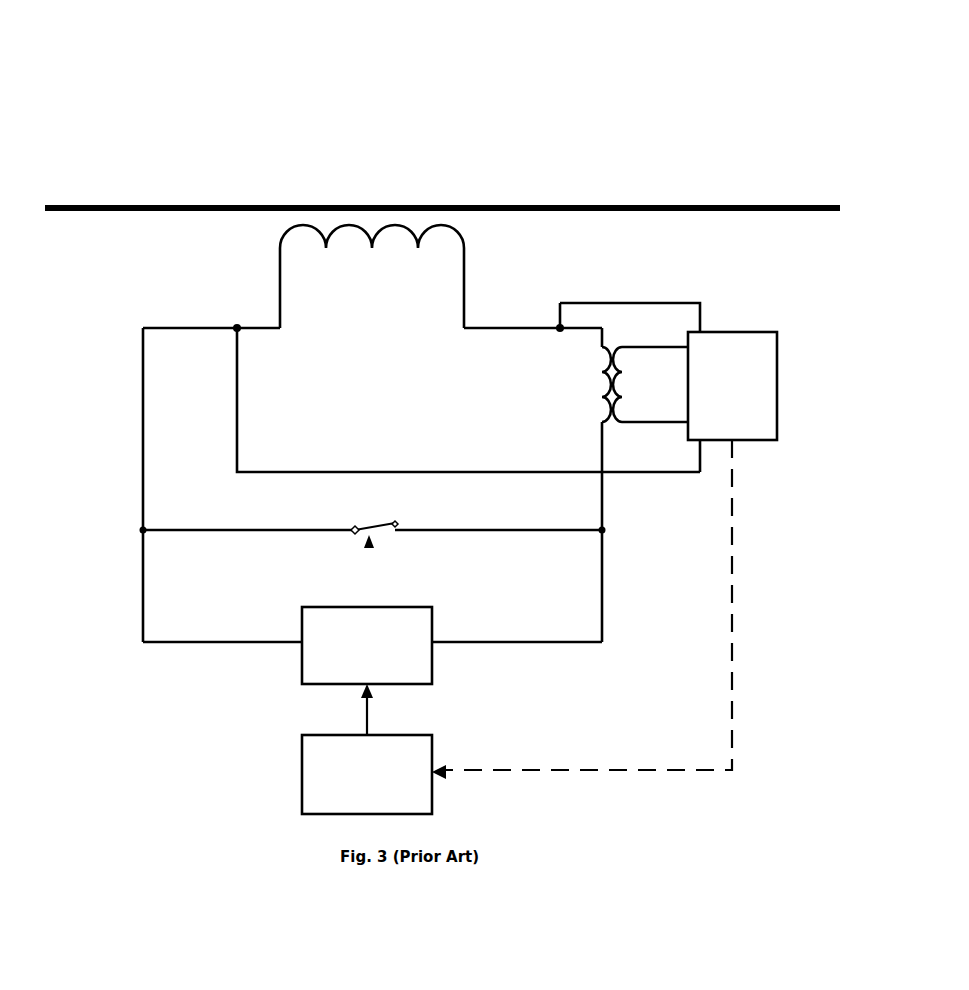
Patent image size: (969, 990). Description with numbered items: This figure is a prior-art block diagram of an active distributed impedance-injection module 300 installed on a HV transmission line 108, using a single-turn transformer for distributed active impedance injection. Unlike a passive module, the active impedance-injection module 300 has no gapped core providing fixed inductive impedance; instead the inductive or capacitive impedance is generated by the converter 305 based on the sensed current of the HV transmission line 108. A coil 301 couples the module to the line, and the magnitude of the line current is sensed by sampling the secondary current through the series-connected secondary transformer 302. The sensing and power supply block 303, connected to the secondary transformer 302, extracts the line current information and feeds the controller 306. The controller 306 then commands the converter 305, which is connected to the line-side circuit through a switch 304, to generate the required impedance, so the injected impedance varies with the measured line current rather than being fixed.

The active distributed impedance-injection module 300 is at (598, 90).
The HV transmission line 108 is at (63, 205).
The induction coil 301 is at (372, 246).
The series-connected secondary transformer 302 is at (619, 340).
The sensing and power supply block 303 is at (718, 443).
The switch 304 is at (380, 527).
The converter 305 is at (375, 605).
The controller 306 is at (300, 770).